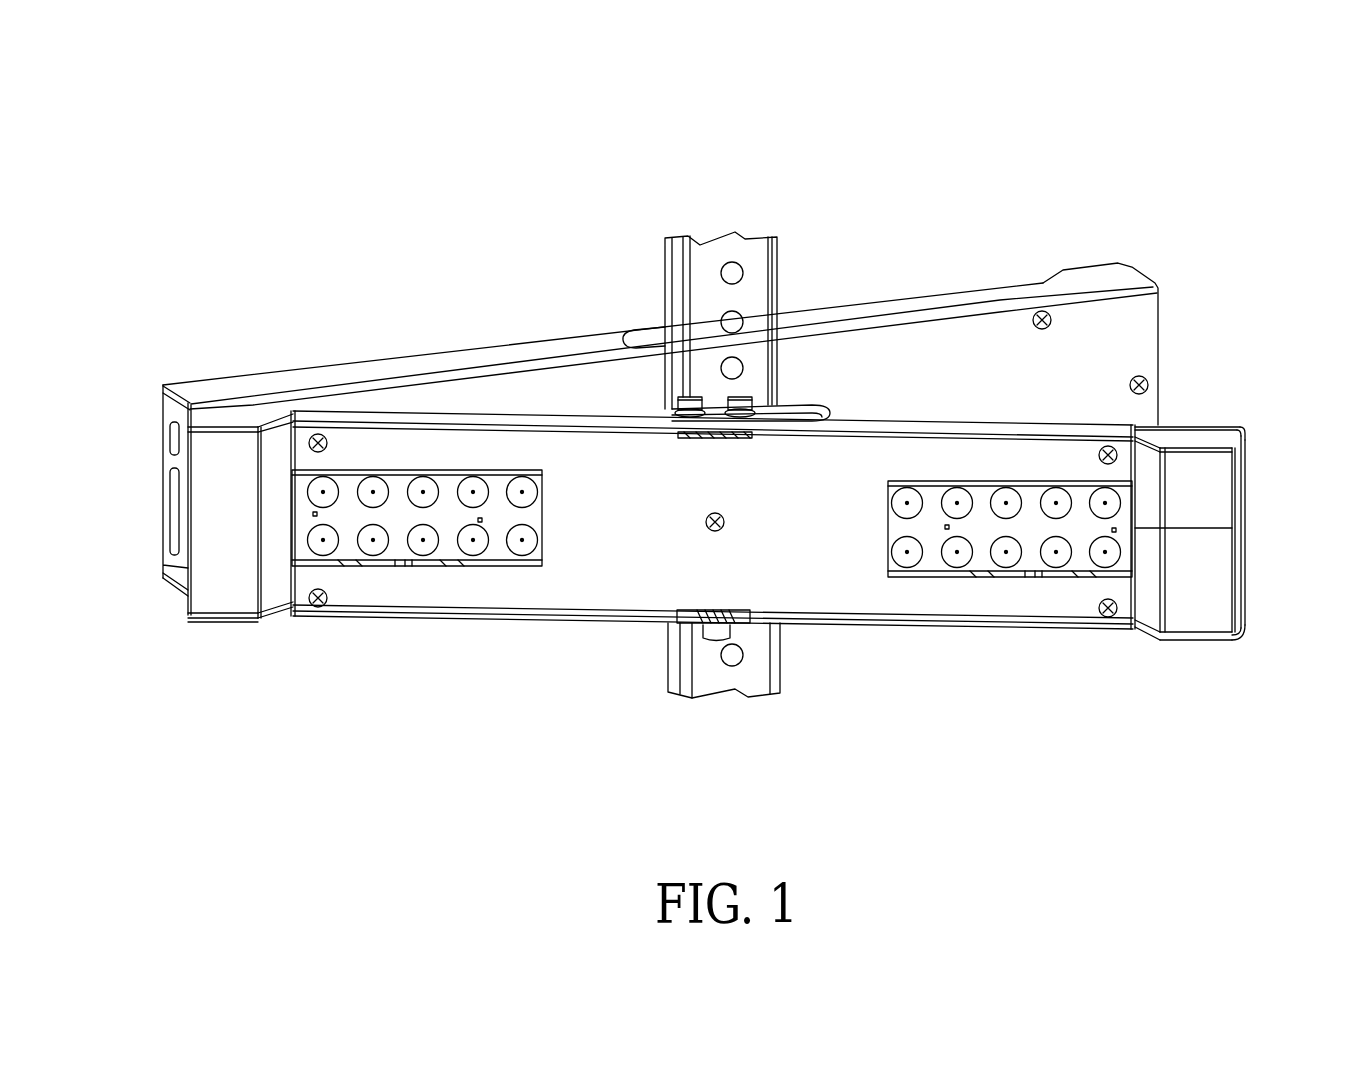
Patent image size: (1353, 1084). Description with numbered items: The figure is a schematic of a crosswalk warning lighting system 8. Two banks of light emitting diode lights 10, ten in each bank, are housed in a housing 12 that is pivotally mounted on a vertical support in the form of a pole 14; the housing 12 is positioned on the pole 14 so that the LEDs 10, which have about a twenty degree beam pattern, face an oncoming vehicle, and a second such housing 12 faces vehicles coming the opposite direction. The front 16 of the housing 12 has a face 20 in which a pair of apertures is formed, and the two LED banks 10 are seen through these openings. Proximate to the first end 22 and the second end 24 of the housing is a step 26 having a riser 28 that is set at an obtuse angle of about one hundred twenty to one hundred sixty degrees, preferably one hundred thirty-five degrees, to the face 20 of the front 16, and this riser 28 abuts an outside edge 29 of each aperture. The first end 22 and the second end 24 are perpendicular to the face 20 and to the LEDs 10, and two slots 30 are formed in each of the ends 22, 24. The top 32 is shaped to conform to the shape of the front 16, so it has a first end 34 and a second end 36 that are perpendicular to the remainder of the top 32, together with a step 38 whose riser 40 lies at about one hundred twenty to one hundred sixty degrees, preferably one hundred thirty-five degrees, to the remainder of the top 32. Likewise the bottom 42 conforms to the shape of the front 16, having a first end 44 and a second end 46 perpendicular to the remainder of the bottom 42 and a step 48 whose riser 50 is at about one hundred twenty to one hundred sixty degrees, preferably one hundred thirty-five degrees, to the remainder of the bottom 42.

The crosswalk warning lighting system 8 is at (855, 147).
The light emitting diode lights 10 is at (445, 547).
The housing 12 is at (997, 264).
The pole 14 is at (762, 262).
The front 16 is at (1070, 457).
The face 20 is at (297, 727).
The first end 22 is at (1246, 500).
The second end 24 is at (188, 567).
The step 26 is at (228, 452).
The riser 28 is at (269, 593).
The outside edge 29 is at (297, 507).
The slots 30 is at (176, 503).
The top 32 is at (1033, 430).
The first end 34 is at (1243, 440).
The second end 36 is at (188, 407).
The step 38 is at (253, 422).
The riser 40 is at (288, 422).
The bottom 42 is at (865, 628).
The first end 44 is at (1244, 633).
The second end 46 is at (185, 612).
The step 48 is at (225, 623).
The riser 50 is at (293, 618).